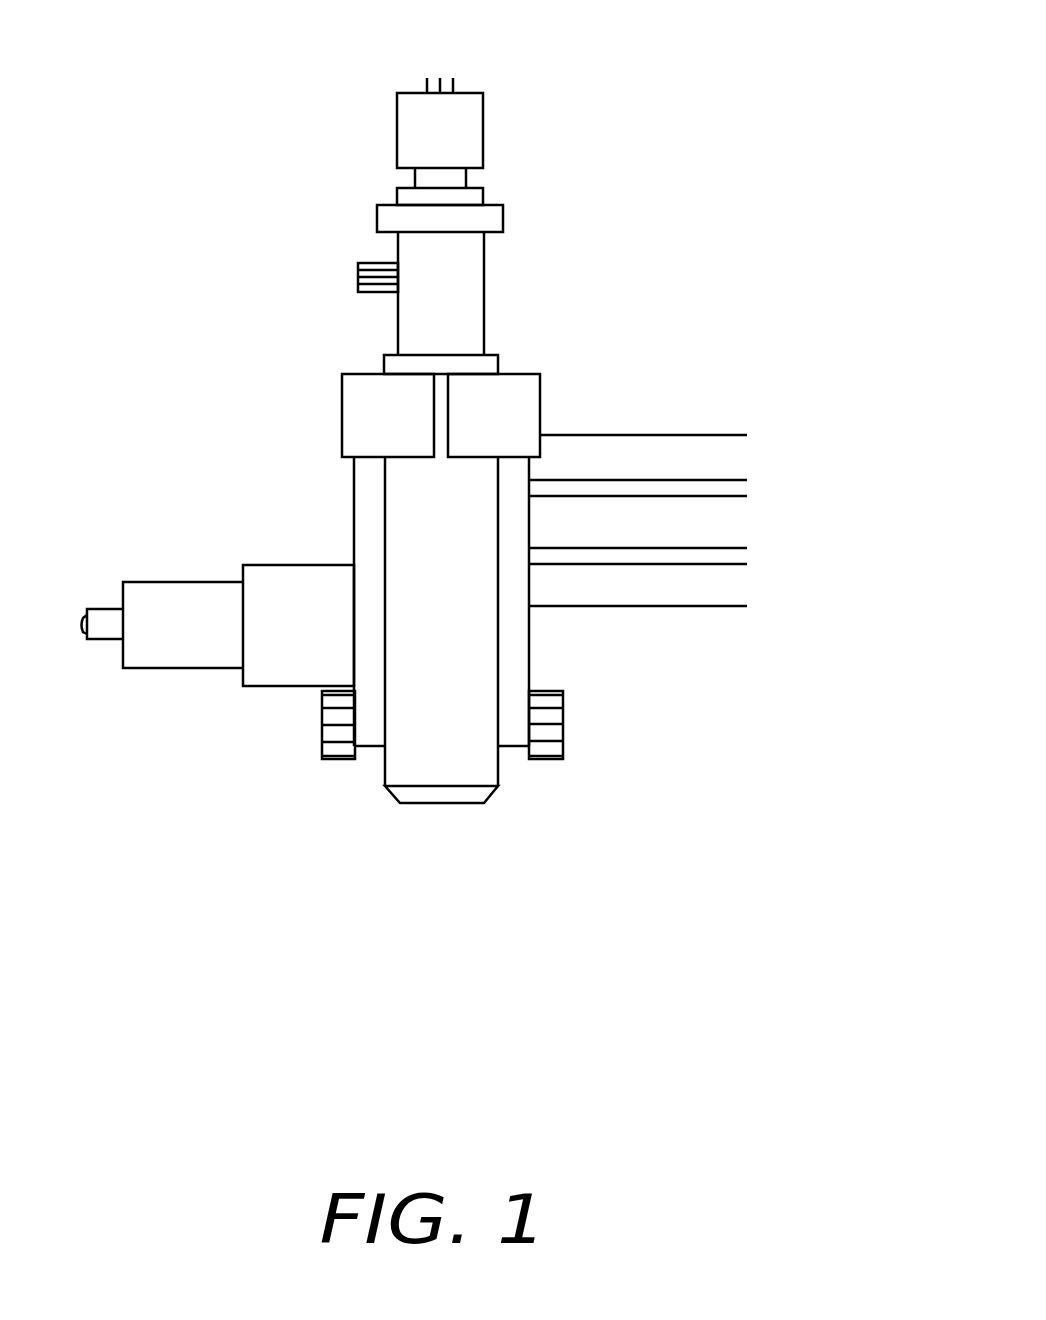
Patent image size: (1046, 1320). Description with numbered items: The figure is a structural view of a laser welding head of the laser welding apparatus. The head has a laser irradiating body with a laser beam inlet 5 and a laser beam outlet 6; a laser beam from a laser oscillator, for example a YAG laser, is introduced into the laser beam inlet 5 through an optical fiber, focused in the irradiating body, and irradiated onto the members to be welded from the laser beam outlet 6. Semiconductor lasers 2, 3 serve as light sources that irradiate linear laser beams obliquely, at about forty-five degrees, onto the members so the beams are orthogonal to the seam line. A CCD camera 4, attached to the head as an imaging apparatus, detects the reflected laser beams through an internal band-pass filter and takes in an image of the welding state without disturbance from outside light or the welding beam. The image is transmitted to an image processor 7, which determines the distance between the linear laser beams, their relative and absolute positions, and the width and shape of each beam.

The semiconductor laser 2 is at (340, 762).
The semiconductor laser 3 is at (543, 762).
The CCD camera 4 is at (458, 88).
The laser beam inlet 5 is at (106, 642).
The laser beam outlet 6 is at (438, 803).
The image processor 7 is at (453, 49).